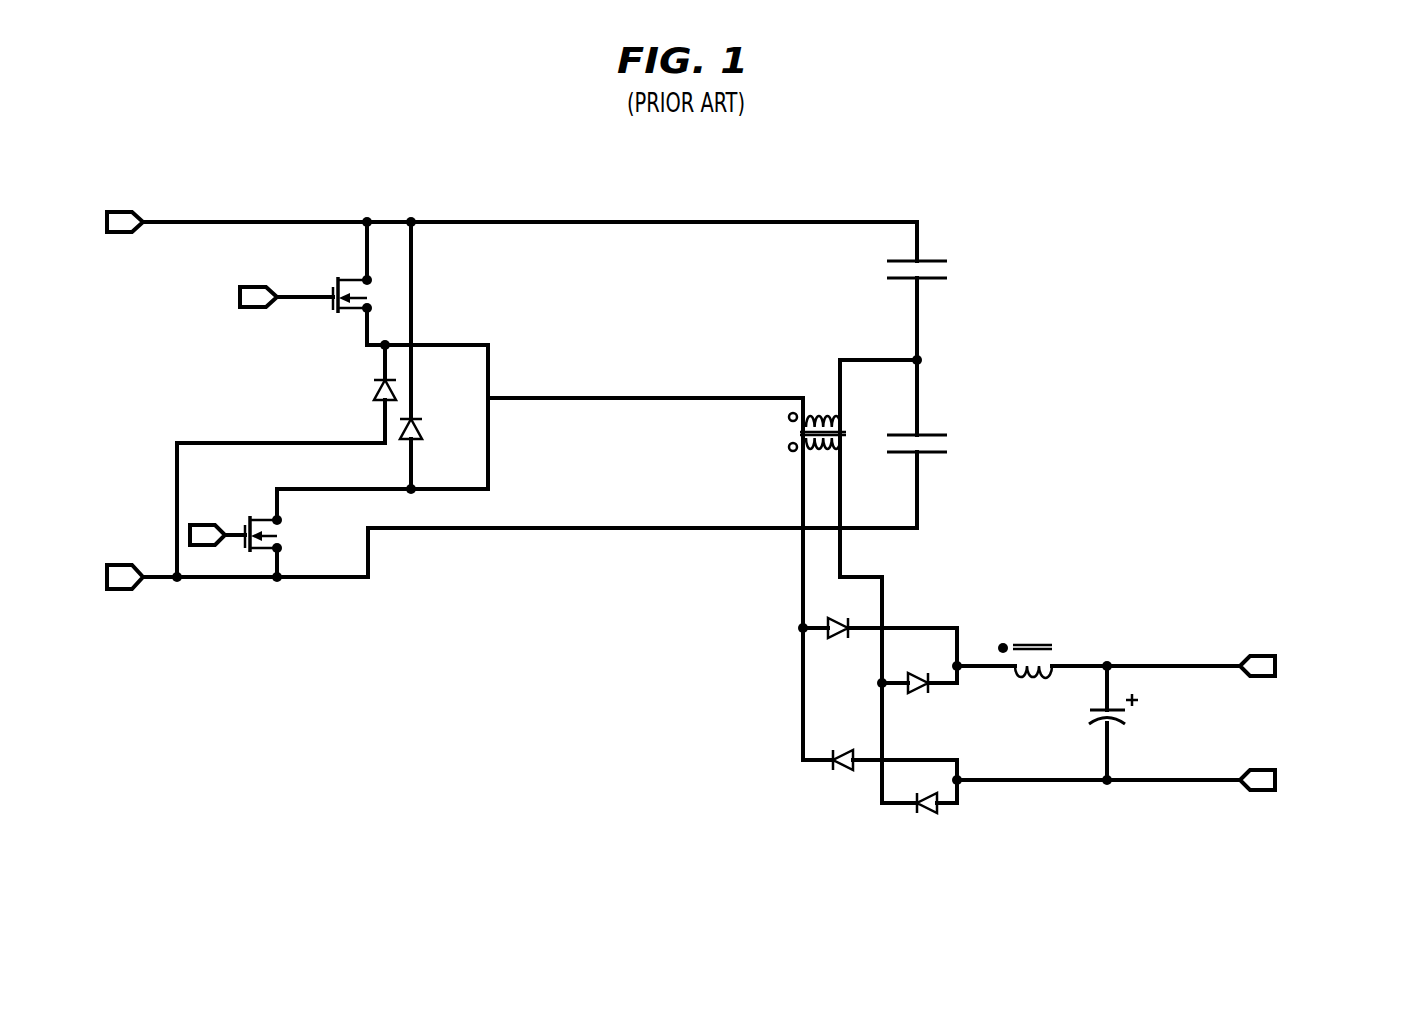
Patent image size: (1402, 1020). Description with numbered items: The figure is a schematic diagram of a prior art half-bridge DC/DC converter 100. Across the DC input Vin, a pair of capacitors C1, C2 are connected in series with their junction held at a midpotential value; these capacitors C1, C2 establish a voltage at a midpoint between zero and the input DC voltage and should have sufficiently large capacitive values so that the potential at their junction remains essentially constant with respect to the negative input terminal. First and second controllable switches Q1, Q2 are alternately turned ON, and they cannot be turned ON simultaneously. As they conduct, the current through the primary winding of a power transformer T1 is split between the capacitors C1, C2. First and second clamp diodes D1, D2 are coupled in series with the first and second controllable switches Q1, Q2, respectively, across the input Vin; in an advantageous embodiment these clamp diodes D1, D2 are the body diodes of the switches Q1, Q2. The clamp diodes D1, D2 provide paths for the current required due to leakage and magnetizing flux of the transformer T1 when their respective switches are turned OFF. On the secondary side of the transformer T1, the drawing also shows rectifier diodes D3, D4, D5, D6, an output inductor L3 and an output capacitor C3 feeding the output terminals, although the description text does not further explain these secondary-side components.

The half-bridge DC/DC converter 100 is at (1075, 246).
The first controllable switch Q1 is at (367, 297).
The second controllable switch Q2 is at (281, 535).
The first clamp diode D1 is at (369, 392).
The second clamp diode D2 is at (427, 430).
The rectifier diode D3 is at (839, 650).
The rectifier diode D4 is at (920, 704).
The rectifier diode D5 is at (844, 782).
The rectifier diode D6 is at (926, 825).
The capacitor C1 is at (937, 270).
The capacitor C2 is at (937, 445).
The output capacitor C3 is at (1128, 716).
The power transformer T1 is at (828, 432).
The output inductor L3 is at (1025, 643).